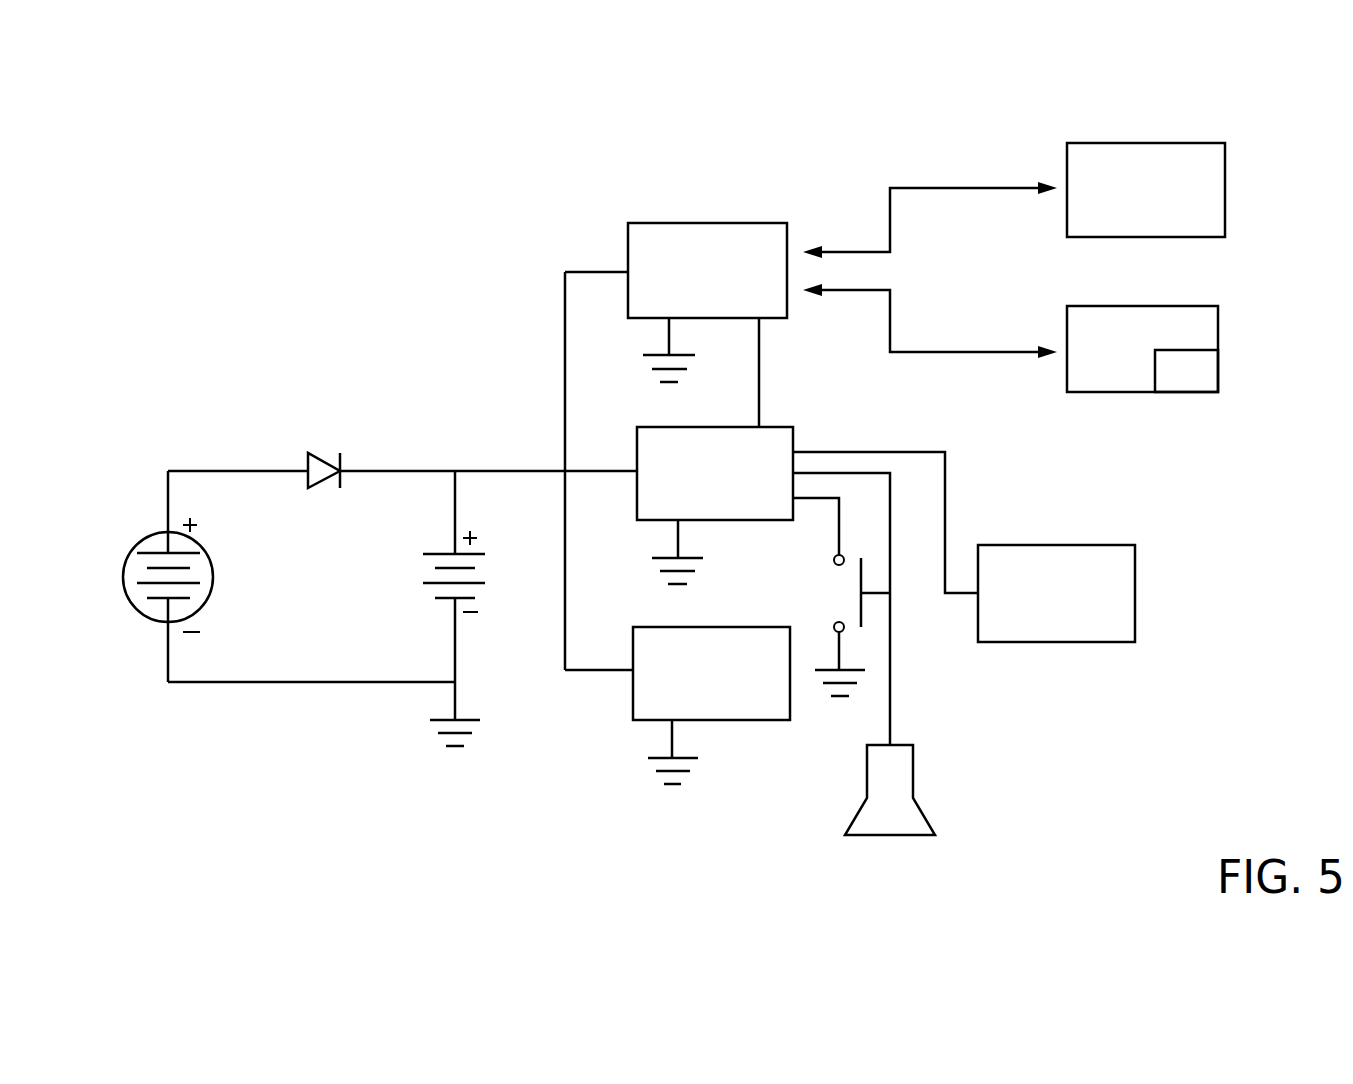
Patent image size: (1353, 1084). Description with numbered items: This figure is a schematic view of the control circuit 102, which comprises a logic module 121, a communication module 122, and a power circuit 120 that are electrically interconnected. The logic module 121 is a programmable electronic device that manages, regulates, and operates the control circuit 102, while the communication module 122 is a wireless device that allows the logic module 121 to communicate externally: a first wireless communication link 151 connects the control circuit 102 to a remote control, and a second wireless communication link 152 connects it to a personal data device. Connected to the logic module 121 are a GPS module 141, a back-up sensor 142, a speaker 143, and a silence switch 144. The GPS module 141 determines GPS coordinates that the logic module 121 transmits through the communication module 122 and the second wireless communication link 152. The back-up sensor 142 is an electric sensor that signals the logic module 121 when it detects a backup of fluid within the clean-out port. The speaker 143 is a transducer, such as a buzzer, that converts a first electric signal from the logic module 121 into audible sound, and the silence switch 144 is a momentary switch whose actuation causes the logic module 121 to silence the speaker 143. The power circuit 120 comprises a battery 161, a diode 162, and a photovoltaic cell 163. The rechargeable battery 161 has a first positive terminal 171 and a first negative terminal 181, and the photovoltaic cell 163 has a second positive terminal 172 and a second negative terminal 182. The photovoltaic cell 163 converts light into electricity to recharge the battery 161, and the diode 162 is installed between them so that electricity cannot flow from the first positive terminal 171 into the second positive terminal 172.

The control circuit 102 is at (210, 194).
The power supply circuit 120 is at (287, 735).
The logic module 121 is at (770, 433).
The communication module 122 is at (743, 222).
The GPS module 141 is at (765, 705).
The back-up sensor 142 is at (1135, 595).
The speaker 143 is at (917, 805).
The silence switch 144 is at (838, 582).
The first wireless communication link 151 is at (972, 188).
The second wireless communication link 152 is at (975, 352).
The battery 161 is at (420, 578).
The diode 162 is at (330, 452).
The photovoltaic cell 163 is at (213, 565).
The first positive terminal 171 is at (455, 510).
The second positive terminal 172 is at (165, 522).
The first negative terminal 181 is at (455, 638).
The second negative terminal 182 is at (165, 632).